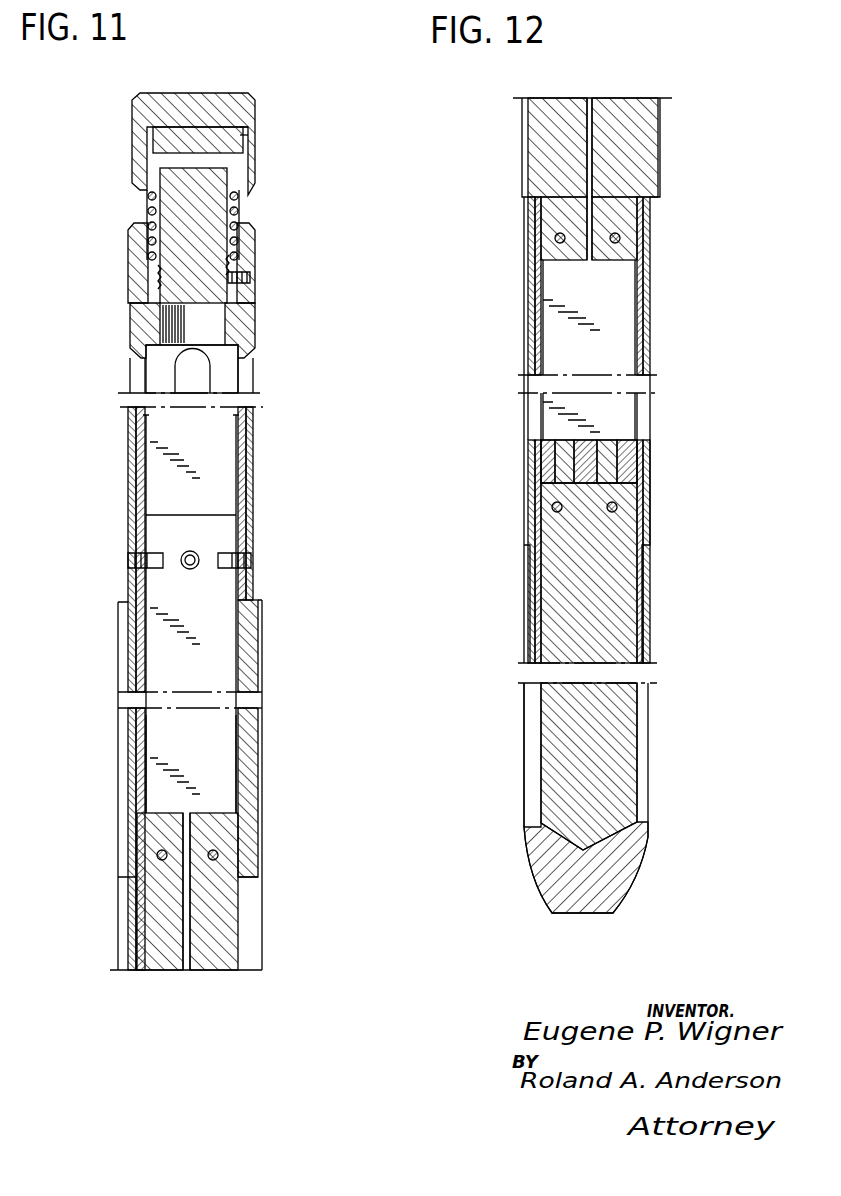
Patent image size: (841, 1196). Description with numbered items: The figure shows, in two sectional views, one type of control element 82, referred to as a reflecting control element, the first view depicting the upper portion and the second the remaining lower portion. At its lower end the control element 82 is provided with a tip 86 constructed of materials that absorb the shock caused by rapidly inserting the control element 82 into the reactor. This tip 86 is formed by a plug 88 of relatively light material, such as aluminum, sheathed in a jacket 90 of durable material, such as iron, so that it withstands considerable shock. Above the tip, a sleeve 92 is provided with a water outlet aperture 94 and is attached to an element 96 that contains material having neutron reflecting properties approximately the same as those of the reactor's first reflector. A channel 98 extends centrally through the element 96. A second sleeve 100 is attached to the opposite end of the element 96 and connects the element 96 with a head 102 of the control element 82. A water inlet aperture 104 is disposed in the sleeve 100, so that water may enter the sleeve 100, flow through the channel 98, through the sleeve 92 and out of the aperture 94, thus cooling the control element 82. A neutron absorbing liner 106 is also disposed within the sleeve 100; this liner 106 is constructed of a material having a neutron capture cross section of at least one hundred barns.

In FIG. 11, the control element 82 is at (257, 478).
In FIG. 12, the control element 82 is at (524, 536).
In FIG. 12, the tip 86 is at (650, 641).
In FIG. 12, the plug 88 is at (607, 732).
In FIG. 12, the jacket 90 is at (650, 593).
In FIG. 12, the sleeve 92 is at (650, 307).
In FIG. 12, the water outlet aperture 94 is at (540, 460).
In FIG. 11, the element 96 is at (242, 929).
In FIG. 12, the element 96 is at (640, 156).
In FIG. 11, the channel 98 is at (187, 972).
In FIG. 12, the channel 98 is at (592, 108).
In FIG. 11, the second sleeve 100 is at (252, 636).
In FIG. 11, the head 102 is at (256, 247).
In FIG. 11, the water inlet aperture 104 is at (246, 360).
In FIG. 11, the neutron absorbing liner 106 is at (226, 757).